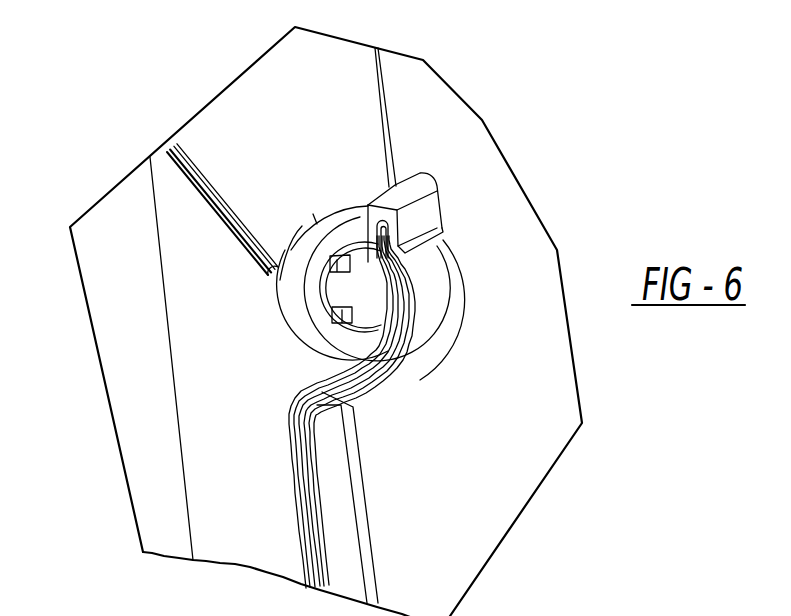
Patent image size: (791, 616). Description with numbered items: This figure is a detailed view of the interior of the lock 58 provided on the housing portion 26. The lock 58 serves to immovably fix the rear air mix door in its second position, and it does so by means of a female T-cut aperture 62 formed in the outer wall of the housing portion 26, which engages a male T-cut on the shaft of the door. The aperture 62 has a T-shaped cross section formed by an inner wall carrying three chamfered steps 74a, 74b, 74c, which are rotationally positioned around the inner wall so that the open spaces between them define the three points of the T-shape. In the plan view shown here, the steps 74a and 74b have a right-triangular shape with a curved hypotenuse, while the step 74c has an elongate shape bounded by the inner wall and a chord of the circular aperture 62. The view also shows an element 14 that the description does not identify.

The panel 14 is at (507, 248).
The housing portion 26 is at (332, 321).
The lock 58 is at (322, 203).
The aperture 62 is at (345, 333).
The chamfered step 74a is at (337, 313).
The chamfered step 74b is at (342, 262).
The chamfered step 74c is at (388, 298).